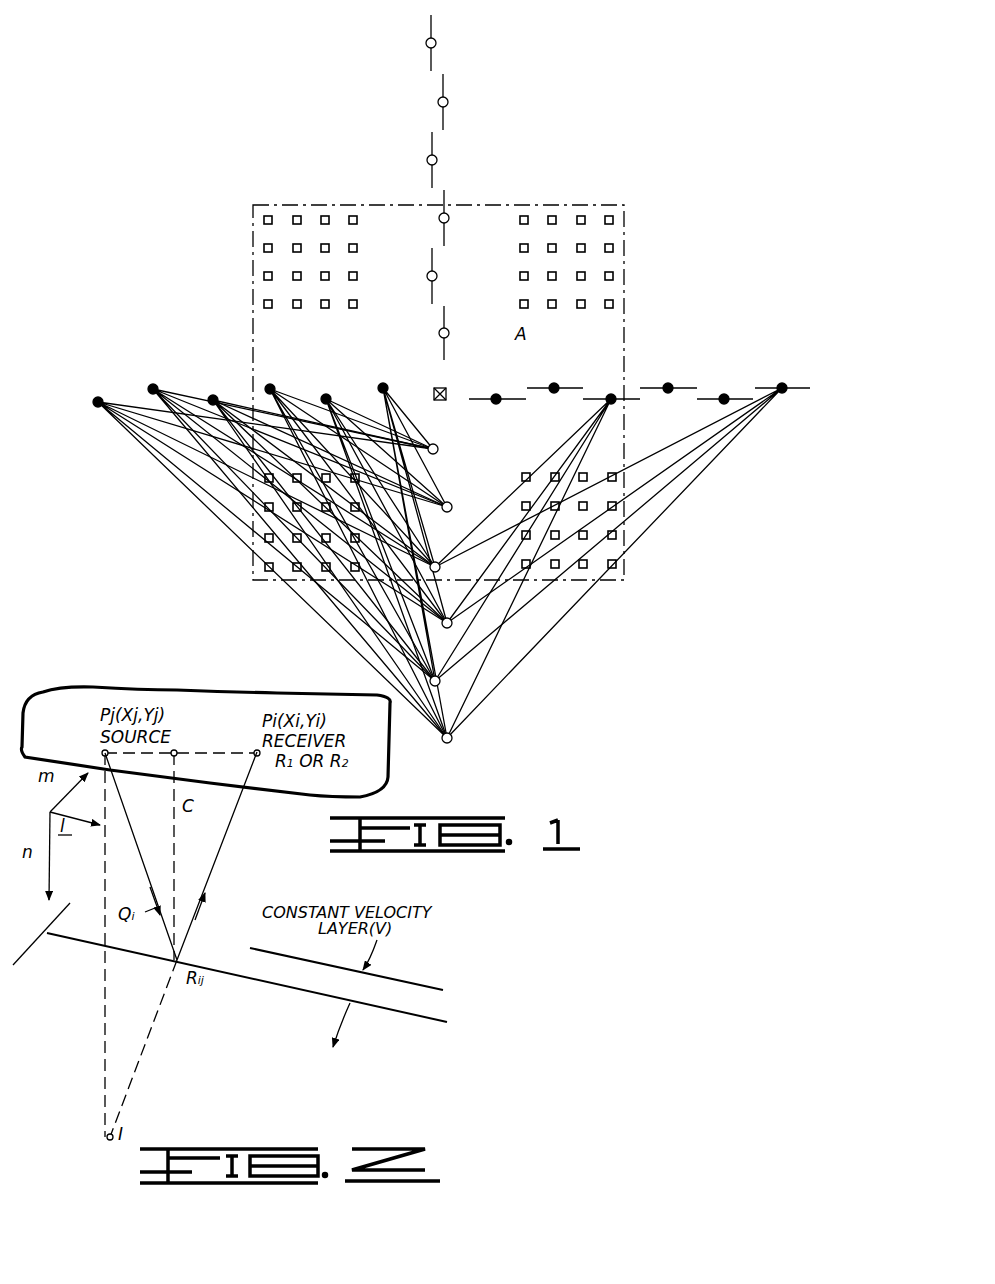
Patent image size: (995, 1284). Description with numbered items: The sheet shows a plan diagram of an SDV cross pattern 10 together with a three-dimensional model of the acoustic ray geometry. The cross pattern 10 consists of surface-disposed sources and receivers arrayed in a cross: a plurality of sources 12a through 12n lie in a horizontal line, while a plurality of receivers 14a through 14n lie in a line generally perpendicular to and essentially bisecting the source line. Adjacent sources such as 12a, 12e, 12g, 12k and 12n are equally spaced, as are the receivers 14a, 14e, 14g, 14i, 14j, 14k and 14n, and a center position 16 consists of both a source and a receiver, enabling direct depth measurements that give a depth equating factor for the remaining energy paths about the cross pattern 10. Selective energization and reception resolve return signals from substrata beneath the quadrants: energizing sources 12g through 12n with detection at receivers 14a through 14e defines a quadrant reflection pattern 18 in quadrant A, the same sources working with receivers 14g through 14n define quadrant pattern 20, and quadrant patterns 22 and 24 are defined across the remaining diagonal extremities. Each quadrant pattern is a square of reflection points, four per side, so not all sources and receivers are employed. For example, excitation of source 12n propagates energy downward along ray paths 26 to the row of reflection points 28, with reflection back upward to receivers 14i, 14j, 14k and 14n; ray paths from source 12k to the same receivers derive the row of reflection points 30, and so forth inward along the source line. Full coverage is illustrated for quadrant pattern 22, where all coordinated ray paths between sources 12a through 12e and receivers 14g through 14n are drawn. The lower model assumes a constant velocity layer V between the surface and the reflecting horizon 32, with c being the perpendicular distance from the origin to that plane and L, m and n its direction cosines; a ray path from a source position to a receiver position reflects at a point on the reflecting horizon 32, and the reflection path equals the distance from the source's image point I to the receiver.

In FIG. 1, the SDV cross pattern 10 is at (612, 110).
In FIG. 1, the quadrant reflection pattern 18 is at (637, 233).
In FIG. 1, the quadrant pattern 24 is at (230, 197).
In FIG. 1, the quadrant pattern 22 is at (240, 584).
In FIG. 1, the quadrant pattern 20 is at (624, 547).
In FIG. 1, the row of reflection points 28 is at (614, 583).
In FIG. 1, the row of reflection points 30 is at (602, 583).
In FIG. 1, the ray paths 26 is at (700, 428).
In FIG. 1, the center position 16 is at (448, 389).
In FIG. 1, the source 12a is at (95, 408).
In FIG. 1, the source 12e is at (385, 382).
In FIG. 1, the source 12g is at (498, 405).
In FIG. 1, the source 12k is at (725, 393).
In FIG. 1, the source 12n is at (786, 394).
In FIG. 1, the receiver 14a is at (437, 44).
In FIG. 1, the receiver 14e is at (448, 331).
In FIG. 1, the receiver 14g is at (438, 450).
In FIG. 1, the receiver 14i is at (437, 573).
In FIG. 1, the receiver 14j is at (452, 625).
In FIG. 1, the receiver 14k is at (455, 680).
In FIG. 1, the receiver 14n is at (451, 734).
In FIG. 2, the reflecting horizon 32 is at (412, 1016).